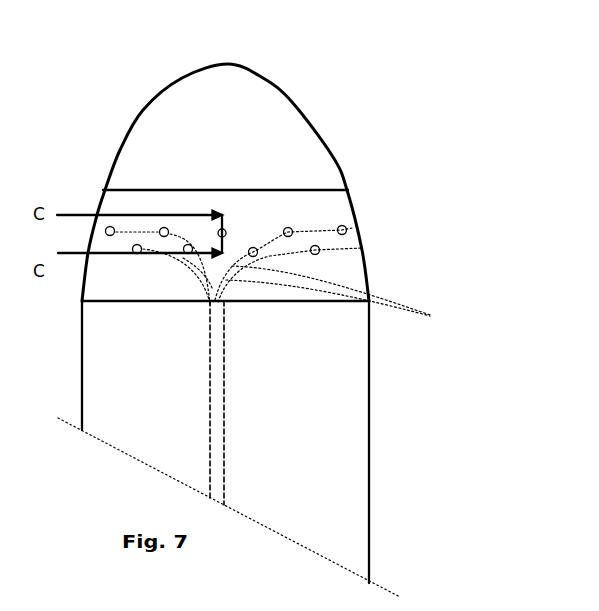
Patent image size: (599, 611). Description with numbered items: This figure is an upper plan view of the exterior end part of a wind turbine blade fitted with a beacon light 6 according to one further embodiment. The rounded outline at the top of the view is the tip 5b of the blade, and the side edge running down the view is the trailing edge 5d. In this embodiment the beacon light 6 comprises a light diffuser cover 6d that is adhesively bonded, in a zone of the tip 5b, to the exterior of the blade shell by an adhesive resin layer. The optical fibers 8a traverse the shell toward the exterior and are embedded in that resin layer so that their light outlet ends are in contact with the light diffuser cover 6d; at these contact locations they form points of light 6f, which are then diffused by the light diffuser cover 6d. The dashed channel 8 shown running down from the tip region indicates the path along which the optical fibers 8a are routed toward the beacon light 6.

The tip 5b is at (233, 62).
The trailing edge 5d is at (370, 512).
The beacon light 6 is at (167, 176).
The light diffuser cover 6d is at (263, 203).
The points of light 6f is at (140, 370).
The optical fibers 8a is at (178, 258).
The channel 8 is at (228, 392).